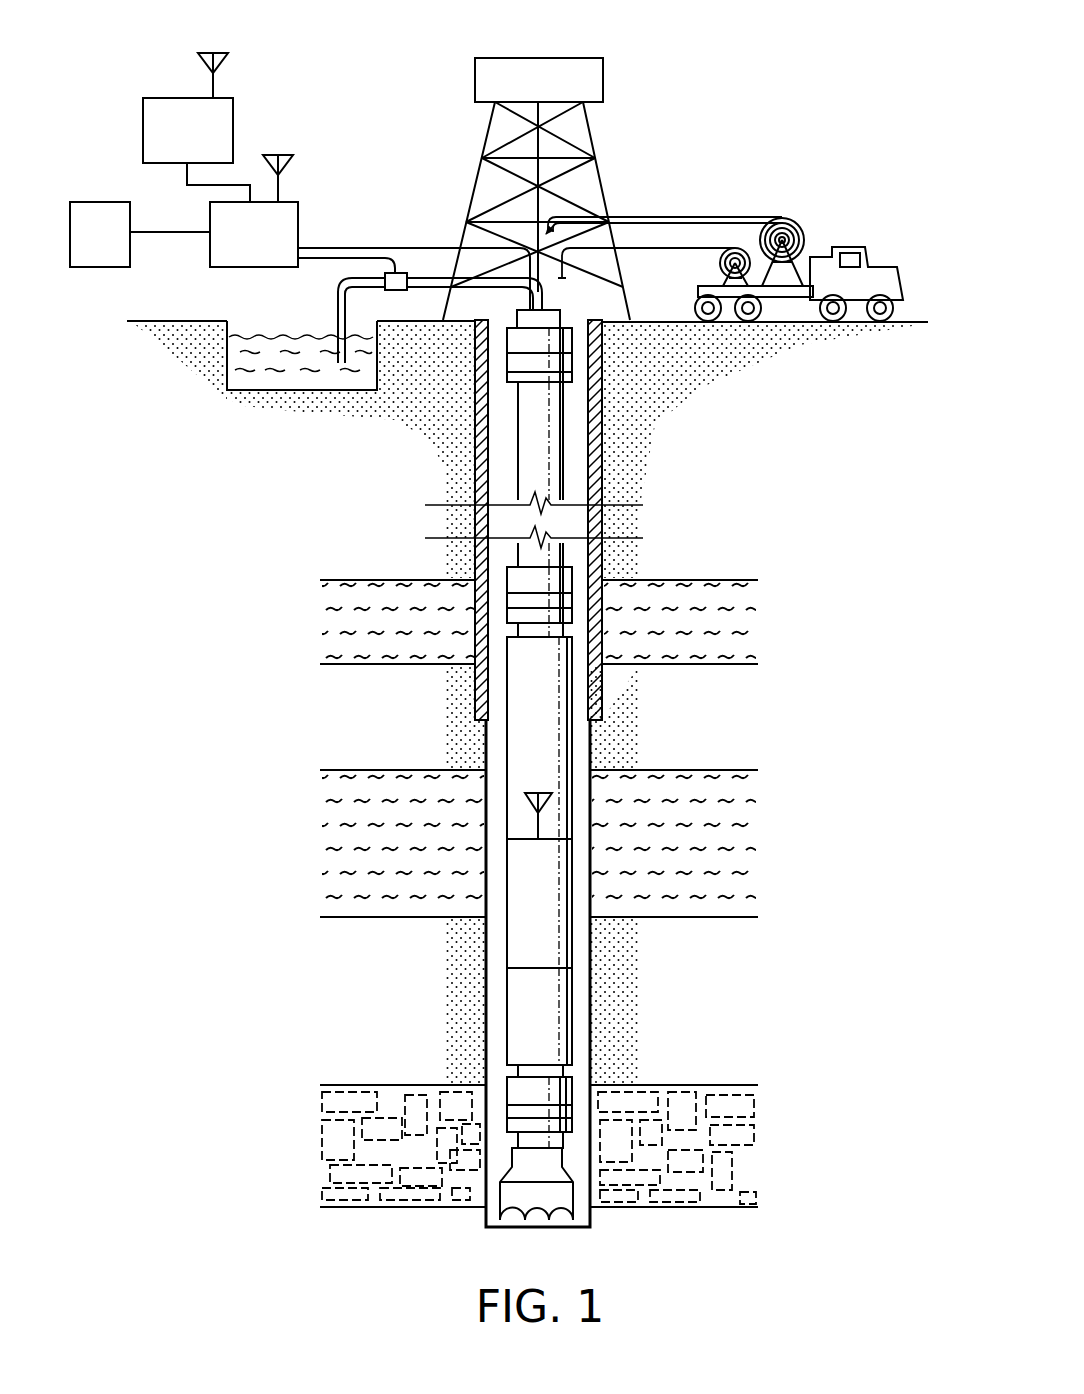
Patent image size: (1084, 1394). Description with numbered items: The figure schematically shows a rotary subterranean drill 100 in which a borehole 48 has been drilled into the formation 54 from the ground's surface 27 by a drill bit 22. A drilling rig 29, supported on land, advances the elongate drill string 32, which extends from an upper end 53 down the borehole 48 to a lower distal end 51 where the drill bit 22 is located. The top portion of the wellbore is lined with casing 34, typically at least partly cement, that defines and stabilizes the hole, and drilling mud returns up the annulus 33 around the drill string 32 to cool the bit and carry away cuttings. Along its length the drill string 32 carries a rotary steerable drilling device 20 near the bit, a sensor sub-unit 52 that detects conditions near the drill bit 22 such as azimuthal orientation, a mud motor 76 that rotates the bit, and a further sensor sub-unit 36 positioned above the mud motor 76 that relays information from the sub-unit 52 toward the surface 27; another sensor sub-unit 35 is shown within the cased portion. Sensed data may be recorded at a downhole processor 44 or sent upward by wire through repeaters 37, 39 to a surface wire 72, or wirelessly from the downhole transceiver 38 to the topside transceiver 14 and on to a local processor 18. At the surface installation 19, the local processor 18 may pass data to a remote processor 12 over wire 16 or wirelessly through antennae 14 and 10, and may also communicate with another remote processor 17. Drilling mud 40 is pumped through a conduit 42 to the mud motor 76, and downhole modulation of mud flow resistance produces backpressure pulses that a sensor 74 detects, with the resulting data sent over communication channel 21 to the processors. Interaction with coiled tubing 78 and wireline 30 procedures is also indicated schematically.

The rotary subterranean drill 100 is at (708, 30).
The antenna 10 is at (218, 55).
The remote processor 12 is at (237, 125).
The topside transceiver (antenna) 14 is at (296, 159).
The wire 16 is at (186, 173).
The remote processor 17 is at (103, 268).
The local processor 18 is at (220, 243).
The surface installation 19 is at (314, 211).
The rotary steerable drilling device 20 is at (525, 1110).
The communication channel 21 is at (317, 264).
The drill bit 22 is at (562, 1200).
The ground's surface 27 is at (160, 314).
The drilling rig 29 is at (610, 152).
The wireline 30 is at (712, 268).
The drill string 32 is at (540, 458).
The annulus 33 is at (503, 468).
The casing 34 is at (603, 488).
The sensor sub-unit 35 is at (569, 316).
The sensor sub-unit 36 is at (500, 584).
The repeater 37 is at (557, 603).
The downhole transceiver (antenna) 38 is at (544, 789).
The repeater 39 is at (543, 360).
The drilling mud 40 is at (262, 378).
The conduit 42 is at (335, 309).
The processor 44 is at (517, 932).
The borehole 48 is at (584, 975).
The lower distal end 51 is at (373, 1023).
The sensor sub-unit 52 is at (578, 1072).
The upper end 53 is at (722, 401).
The formation 54 is at (401, 459).
The surface wire 72 is at (355, 247).
The sensor 74 is at (398, 272).
The mud motor 76 is at (520, 1040).
The coiled tubing 78 is at (817, 202).